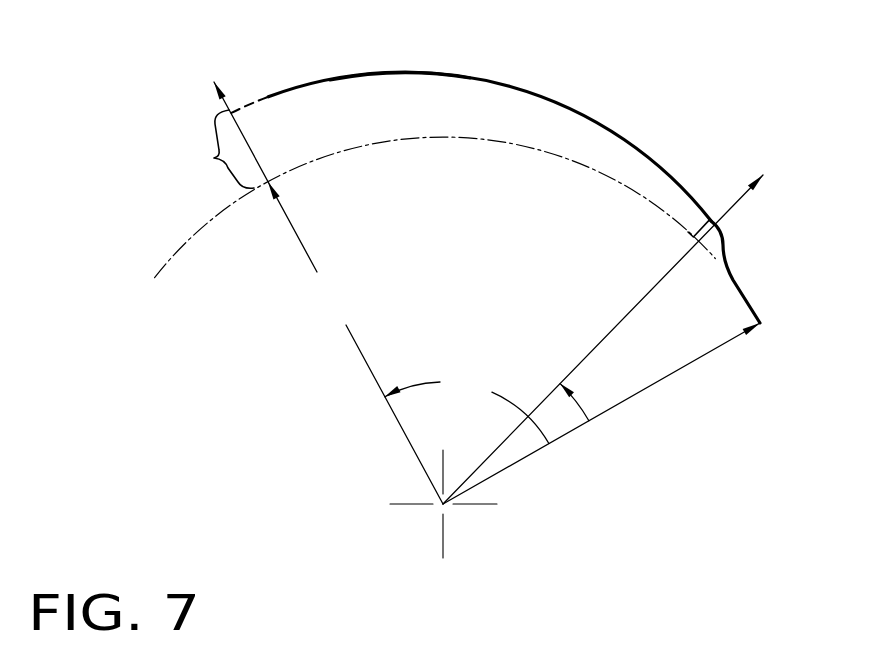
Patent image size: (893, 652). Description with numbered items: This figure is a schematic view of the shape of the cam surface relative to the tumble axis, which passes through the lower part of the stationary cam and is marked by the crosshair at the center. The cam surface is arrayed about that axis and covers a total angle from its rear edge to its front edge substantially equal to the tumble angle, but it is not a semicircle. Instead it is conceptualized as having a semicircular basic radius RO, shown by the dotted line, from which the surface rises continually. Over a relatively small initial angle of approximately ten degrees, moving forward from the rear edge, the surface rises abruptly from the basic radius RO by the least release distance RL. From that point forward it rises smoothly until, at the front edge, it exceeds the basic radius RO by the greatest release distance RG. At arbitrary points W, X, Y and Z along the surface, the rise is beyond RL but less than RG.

The arbitrary point on cam surface X is at (547, 98).
The arbitrary point on cam surface Y is at (395, 72).
The arbitrary point on cam surface Z is at (268, 96).
The arbitrary point on cam surface W is at (663, 165).
The basic radius RO is at (443, 505).
The greatest release distance RG is at (218, 158).
The least release distance RL is at (697, 225).